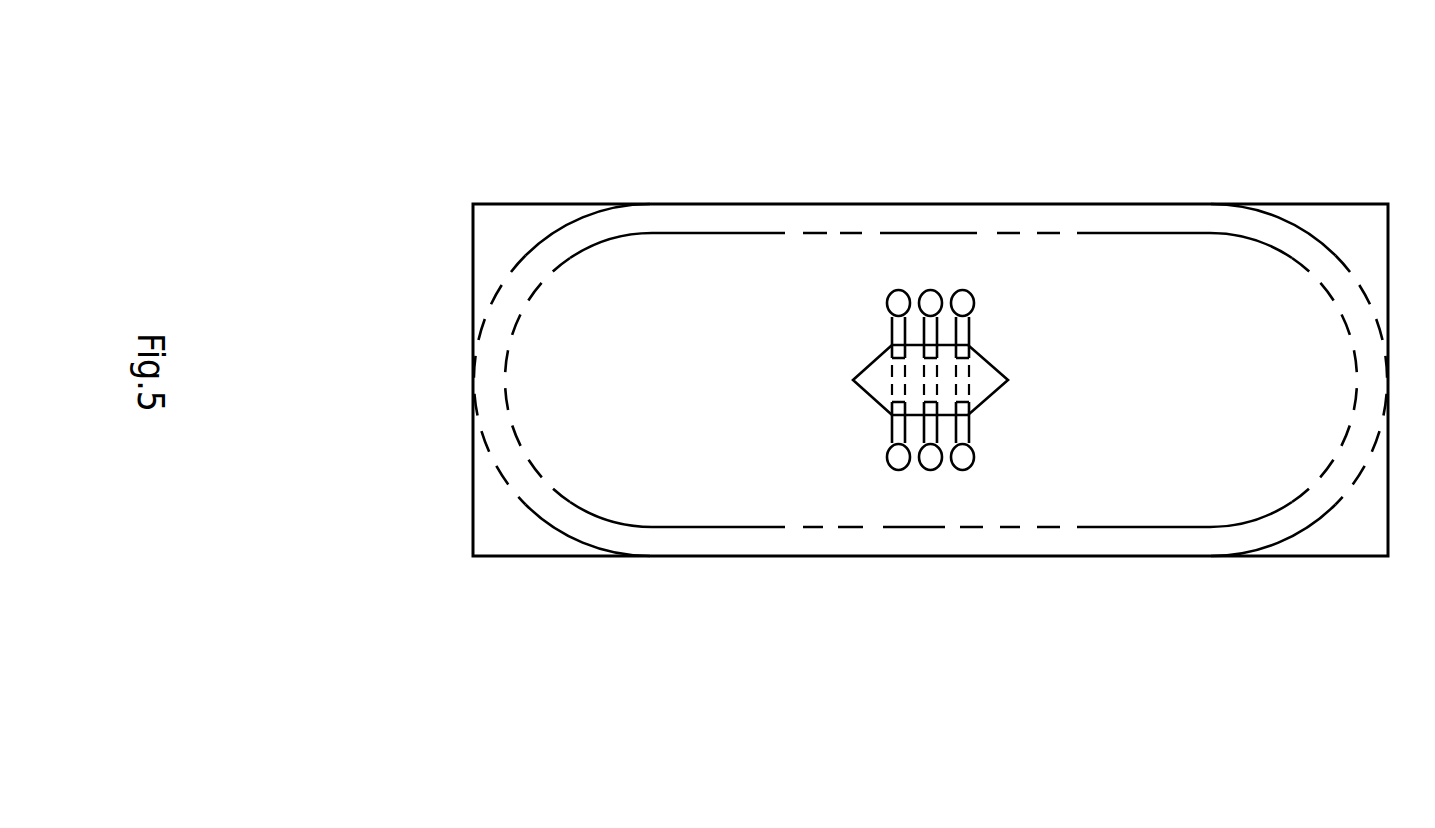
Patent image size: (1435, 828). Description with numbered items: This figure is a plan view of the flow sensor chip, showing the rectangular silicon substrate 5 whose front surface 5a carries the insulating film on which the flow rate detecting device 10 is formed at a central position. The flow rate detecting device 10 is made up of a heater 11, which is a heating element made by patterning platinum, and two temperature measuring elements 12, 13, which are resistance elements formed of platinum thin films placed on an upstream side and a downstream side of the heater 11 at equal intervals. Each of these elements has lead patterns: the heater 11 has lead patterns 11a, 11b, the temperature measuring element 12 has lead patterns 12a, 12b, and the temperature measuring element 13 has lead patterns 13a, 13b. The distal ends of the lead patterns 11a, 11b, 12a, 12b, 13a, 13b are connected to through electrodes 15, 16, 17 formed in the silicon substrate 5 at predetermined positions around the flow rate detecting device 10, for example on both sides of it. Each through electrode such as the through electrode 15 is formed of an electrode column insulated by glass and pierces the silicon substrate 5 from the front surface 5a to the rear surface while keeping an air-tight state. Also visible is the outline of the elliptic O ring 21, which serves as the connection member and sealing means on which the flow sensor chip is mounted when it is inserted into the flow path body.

The silicon substrate 5 is at (1352, 203).
The front surface 5a is at (1222, 257).
The elliptic O ring 21 is at (572, 242).
The flow rate detecting device 10 is at (993, 360).
The heater 11 is at (928, 386).
The lead pattern 11a is at (938, 433).
The lead pattern 11b is at (945, 325).
The temperature measuring element 12 is at (880, 392).
The lead pattern 12a is at (890, 438).
The lead pattern 12b is at (892, 333).
The temperature measuring element 13 is at (968, 378).
The lead pattern 13a is at (970, 433).
The lead pattern 13b is at (969, 332).
The through electrode 15 is at (924, 295).
The through electrode 16 is at (888, 296).
The through electrode 17 is at (960, 296).